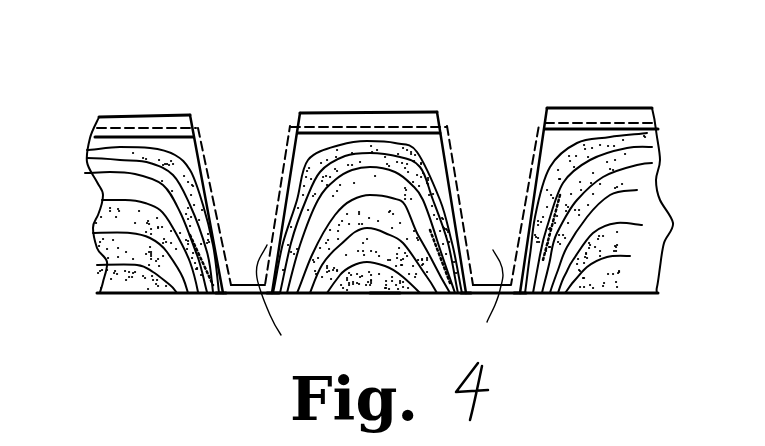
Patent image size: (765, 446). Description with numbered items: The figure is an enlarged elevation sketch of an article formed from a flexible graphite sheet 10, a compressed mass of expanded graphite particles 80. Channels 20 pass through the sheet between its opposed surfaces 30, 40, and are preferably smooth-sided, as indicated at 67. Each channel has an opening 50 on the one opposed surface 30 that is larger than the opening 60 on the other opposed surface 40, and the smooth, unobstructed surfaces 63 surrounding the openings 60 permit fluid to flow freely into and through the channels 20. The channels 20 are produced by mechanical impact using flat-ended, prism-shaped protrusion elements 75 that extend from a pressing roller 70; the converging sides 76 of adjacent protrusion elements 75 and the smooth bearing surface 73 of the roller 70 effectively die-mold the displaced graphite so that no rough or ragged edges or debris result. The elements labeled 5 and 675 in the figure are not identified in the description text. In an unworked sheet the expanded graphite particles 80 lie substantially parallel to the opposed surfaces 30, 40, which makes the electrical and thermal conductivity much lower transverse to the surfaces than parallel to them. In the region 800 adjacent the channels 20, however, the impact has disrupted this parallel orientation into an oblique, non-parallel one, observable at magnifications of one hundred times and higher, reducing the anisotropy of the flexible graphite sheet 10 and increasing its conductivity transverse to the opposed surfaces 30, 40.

The flexible graphite sheet 10 is at (130, 88).
The channels 20 is at (248, 122).
The occlusal layer 5 is at (110, 125).
The smooth bearing surface 73 is at (170, 112).
The enamel layer 675 is at (177, 120).
The pressing roller 70 is at (207, 123).
The protrusion elements 75 is at (236, 189).
The smooth-sided channel walls 67 is at (272, 230).
The channel openings 50 is at (277, 130).
The opposed surface 30 is at (392, 125).
The expanded graphite particles 80 is at (97, 168).
The region of disrupted particle orientation 800 is at (187, 163).
The opposed surface 40 is at (387, 293).
The smooth unobstructed surfaces 63 is at (218, 293).
The channel openings 60 is at (222, 255).
The converging sides of protrusion elements 76 is at (379, 298).